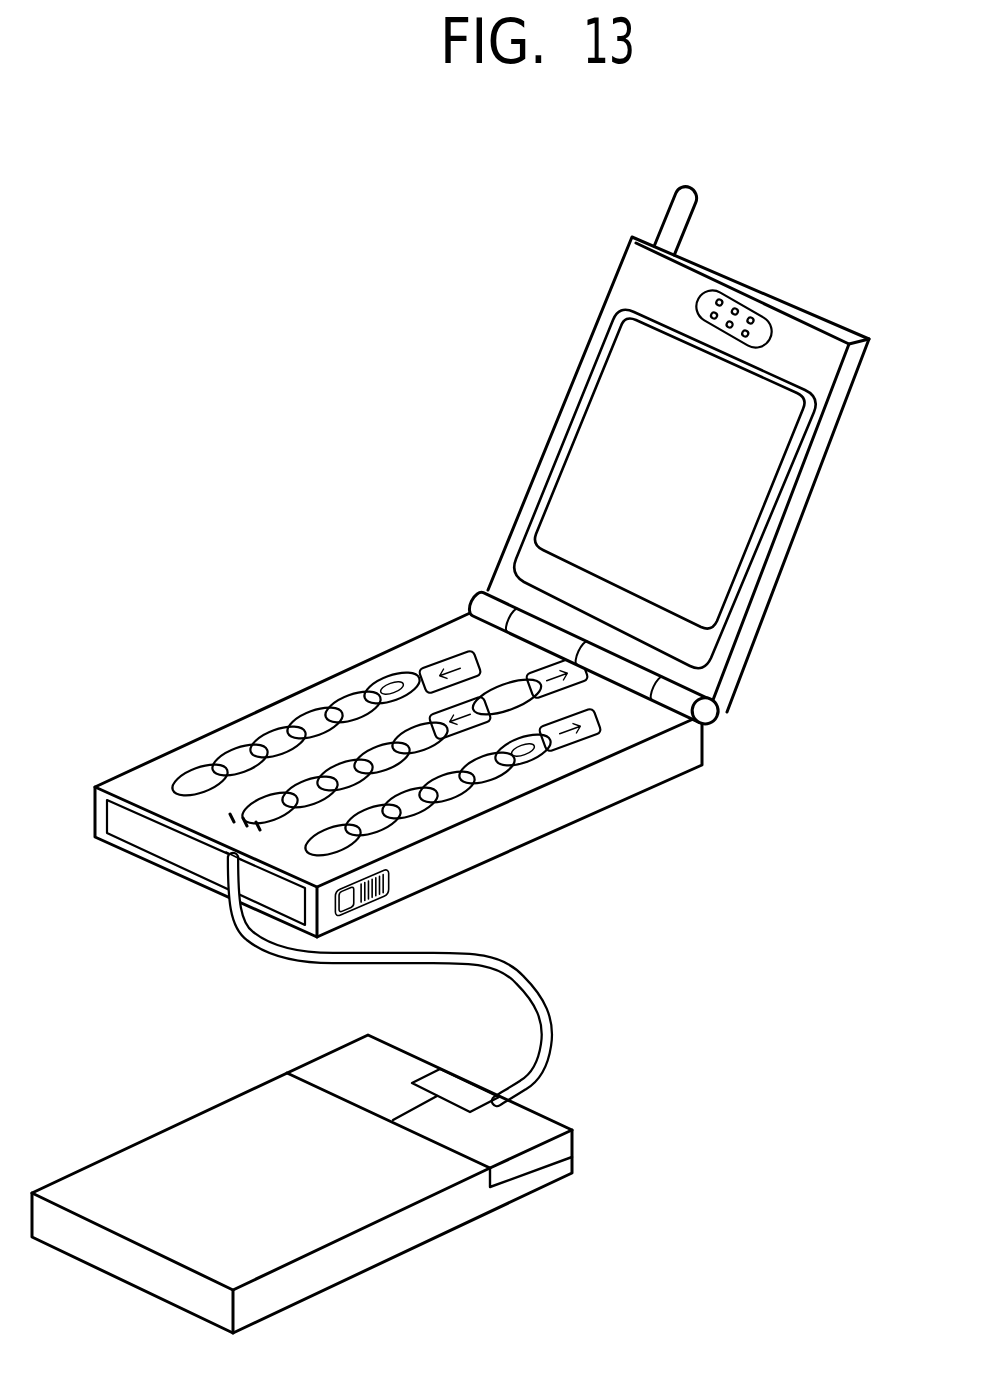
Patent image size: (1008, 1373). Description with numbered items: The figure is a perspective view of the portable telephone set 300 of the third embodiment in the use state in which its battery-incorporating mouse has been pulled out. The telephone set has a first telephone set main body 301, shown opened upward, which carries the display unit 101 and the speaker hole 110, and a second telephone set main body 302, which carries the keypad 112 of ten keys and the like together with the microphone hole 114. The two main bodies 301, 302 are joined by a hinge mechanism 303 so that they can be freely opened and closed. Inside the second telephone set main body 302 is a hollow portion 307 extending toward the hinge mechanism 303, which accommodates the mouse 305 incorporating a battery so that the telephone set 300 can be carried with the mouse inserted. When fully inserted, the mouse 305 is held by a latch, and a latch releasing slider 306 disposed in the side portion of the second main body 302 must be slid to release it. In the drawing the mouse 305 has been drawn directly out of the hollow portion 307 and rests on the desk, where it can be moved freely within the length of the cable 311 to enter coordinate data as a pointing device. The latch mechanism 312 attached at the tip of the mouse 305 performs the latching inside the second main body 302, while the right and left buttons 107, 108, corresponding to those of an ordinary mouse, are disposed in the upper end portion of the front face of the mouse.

The portable telephone set 300 is at (481, 642).
The first telephone set main body 301 is at (810, 478).
The second telephone set main body 302 is at (510, 835).
The hinge mechanism 303 is at (622, 673).
The display unit 101 is at (587, 463).
The speaker hole 110 is at (752, 334).
The keypad 112 is at (356, 655).
The microphone hole 114 is at (223, 813).
The latch releasing slider 306 is at (357, 905).
The hollow portion 307 is at (300, 912).
The cable 311 is at (547, 993).
The latch mechanism 312 is at (462, 1090).
The mouse incorporating a battery 305 is at (375, 1250).
The right button 107 is at (525, 1120).
The left button 108 is at (337, 1062).